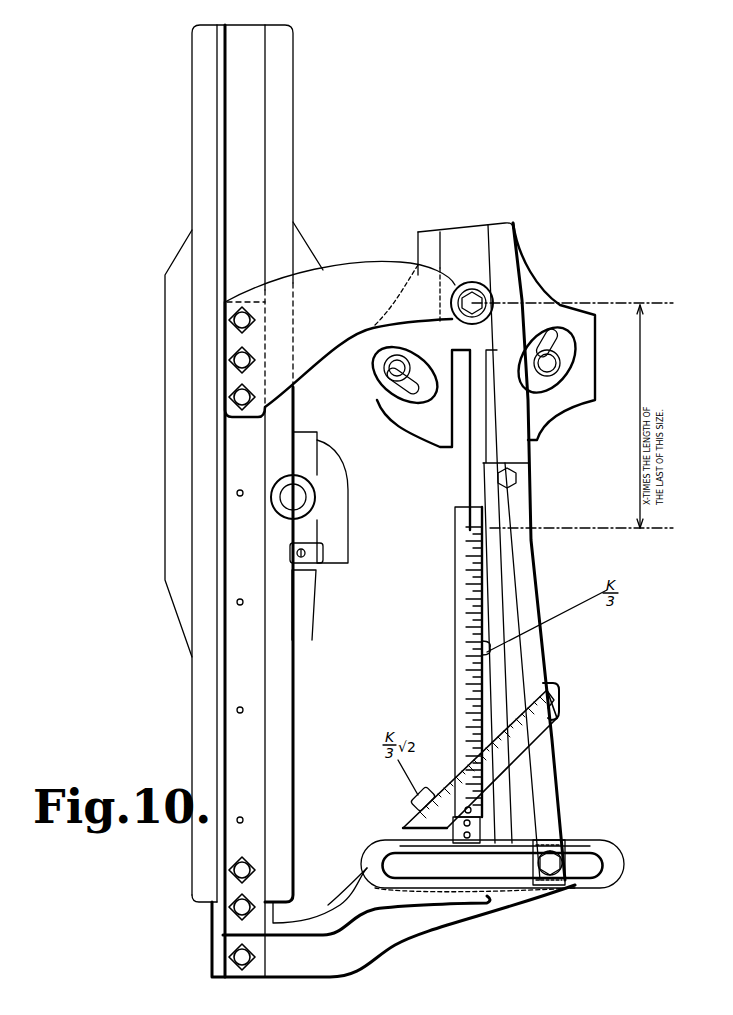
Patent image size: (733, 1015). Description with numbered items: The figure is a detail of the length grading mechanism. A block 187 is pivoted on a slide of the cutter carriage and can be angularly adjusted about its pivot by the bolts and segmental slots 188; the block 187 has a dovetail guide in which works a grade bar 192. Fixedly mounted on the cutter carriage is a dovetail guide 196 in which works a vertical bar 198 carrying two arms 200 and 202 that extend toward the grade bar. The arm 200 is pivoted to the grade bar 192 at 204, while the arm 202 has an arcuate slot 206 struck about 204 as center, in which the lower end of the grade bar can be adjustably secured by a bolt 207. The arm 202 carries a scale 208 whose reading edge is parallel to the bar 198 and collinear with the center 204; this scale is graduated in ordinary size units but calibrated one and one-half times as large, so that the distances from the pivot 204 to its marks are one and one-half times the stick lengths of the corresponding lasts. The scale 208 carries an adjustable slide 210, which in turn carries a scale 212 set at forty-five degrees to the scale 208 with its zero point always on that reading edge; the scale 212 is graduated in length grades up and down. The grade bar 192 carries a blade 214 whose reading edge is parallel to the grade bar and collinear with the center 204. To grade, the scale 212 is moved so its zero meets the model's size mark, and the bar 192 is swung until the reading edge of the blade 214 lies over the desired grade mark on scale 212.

The block 187 is at (553, 398).
The bolts and segmental slots 188 is at (393, 380).
The grade bar 192 is at (488, 567).
The dovetail guide 196 is at (178, 550).
The vertical bar 198 is at (242, 760).
The arm 200 is at (340, 339).
The arm 202 is at (393, 922).
The pivot 204 is at (476, 300).
The arcuate slot 206 is at (387, 862).
The bolt 207 is at (598, 857).
The scale 208 is at (455, 521).
The adjustable slide 210 is at (480, 820).
The scale 212 is at (557, 703).
The blade 214 is at (533, 662).